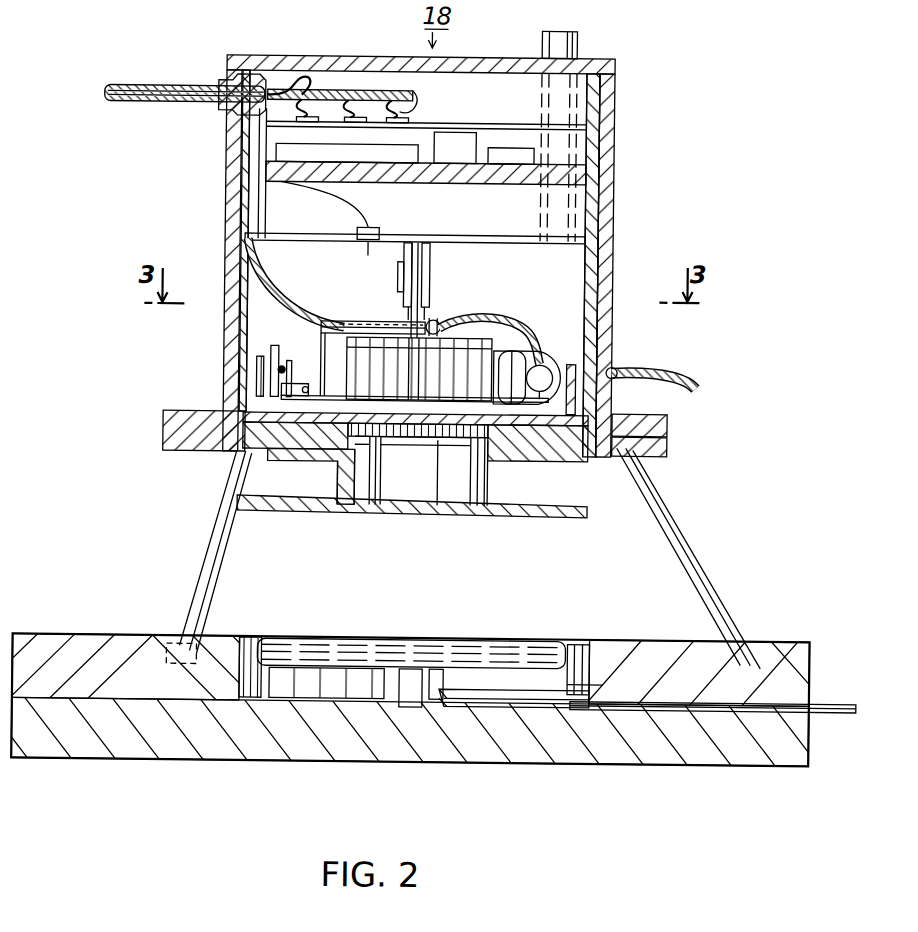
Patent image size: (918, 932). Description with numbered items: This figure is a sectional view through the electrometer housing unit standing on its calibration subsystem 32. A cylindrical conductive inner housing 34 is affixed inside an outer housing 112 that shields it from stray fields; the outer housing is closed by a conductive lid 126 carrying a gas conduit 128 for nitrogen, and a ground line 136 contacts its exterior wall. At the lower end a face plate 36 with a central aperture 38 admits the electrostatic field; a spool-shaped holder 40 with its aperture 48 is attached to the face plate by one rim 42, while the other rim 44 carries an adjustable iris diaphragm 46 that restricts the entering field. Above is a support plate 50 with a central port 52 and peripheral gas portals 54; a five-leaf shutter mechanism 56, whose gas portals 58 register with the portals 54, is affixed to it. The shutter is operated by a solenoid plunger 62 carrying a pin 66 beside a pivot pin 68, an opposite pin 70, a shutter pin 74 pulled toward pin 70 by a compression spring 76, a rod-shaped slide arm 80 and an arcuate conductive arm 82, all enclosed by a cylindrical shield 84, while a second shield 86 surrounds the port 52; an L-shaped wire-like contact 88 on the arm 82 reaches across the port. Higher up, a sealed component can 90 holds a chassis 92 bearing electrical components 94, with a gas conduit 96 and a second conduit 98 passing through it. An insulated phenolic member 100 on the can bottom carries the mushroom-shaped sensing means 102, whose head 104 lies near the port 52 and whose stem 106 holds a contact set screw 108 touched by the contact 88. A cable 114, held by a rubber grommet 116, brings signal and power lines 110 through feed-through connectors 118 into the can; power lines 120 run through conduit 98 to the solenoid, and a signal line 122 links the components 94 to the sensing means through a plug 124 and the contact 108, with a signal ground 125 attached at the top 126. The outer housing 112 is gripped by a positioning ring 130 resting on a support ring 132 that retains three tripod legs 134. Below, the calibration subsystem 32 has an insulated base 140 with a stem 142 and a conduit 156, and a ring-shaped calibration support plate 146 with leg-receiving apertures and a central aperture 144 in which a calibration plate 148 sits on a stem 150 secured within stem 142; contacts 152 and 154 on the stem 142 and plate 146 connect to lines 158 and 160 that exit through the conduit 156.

The calibration subsystem 32 is at (355, 774).
The inner housing 34 is at (615, 209).
The face plate 36 is at (573, 461).
The aperture 38 is at (340, 508).
The holder 40 is at (494, 492).
The rim 42 is at (311, 476).
The rim 44 is at (284, 500).
The iris diaphragm 46 is at (388, 459).
The aperture 48 is at (396, 505).
The support plate 50 is at (606, 415).
The port 52 is at (403, 418).
The gas portals 54 is at (305, 404).
The shutter mechanism 56 is at (246, 450).
The gas portals 58 is at (505, 461).
The plunger 62 is at (540, 372).
The pin 66 is at (555, 358).
The pivot pin 68 is at (518, 345).
The pin 70 is at (274, 355).
The pin 74 is at (298, 358).
The compression spring 76 is at (282, 370).
The slide arm 80 is at (298, 386).
The arm 82 is at (441, 425).
The shield 84 is at (334, 364).
The second shield 86 is at (347, 330).
The contact 88 is at (443, 320).
The component can 90 is at (588, 235).
The chassis 92 is at (577, 172).
The electrical components 94 is at (500, 150).
The gas conduit 96 is at (576, 104).
The second conduit 98 is at (243, 229).
The insulated member 100 is at (432, 248).
The sensing means 102 is at (468, 325).
The head or plate portion 104 is at (419, 369).
The stem 106 is at (398, 279).
The electrical contact set screw 108 is at (402, 318).
The signal and power lines 110 is at (369, 92).
The outer housing 112 is at (228, 179).
The cable 114 is at (152, 92).
The grommet 116 is at (220, 107).
The electrical feed through connectors 118 is at (398, 120).
The power lines 120 is at (281, 292).
The signal line 122 is at (355, 209).
The electrical plug 124 is at (380, 233).
The signal ground 125 is at (301, 76).
The lid or top 126 is at (261, 57).
The gas conduit 128 is at (578, 41).
The positioning ring 130 is at (670, 424).
The support ring 132 is at (670, 447).
The tripod legs 134 is at (693, 527).
The ground line 136 is at (669, 373).
The insulated base member 140 is at (579, 738).
The stem or post 142 is at (390, 685).
The aperture 144 is at (263, 692).
The calibration support plate 146 is at (104, 637).
The calibration plate 148 is at (459, 640).
The stem 150 is at (414, 705).
The electrical contact 152 is at (450, 680).
The contact 154 is at (602, 653).
The conduit 156 is at (816, 698).
The line 158 is at (475, 706).
The line 160 is at (550, 695).